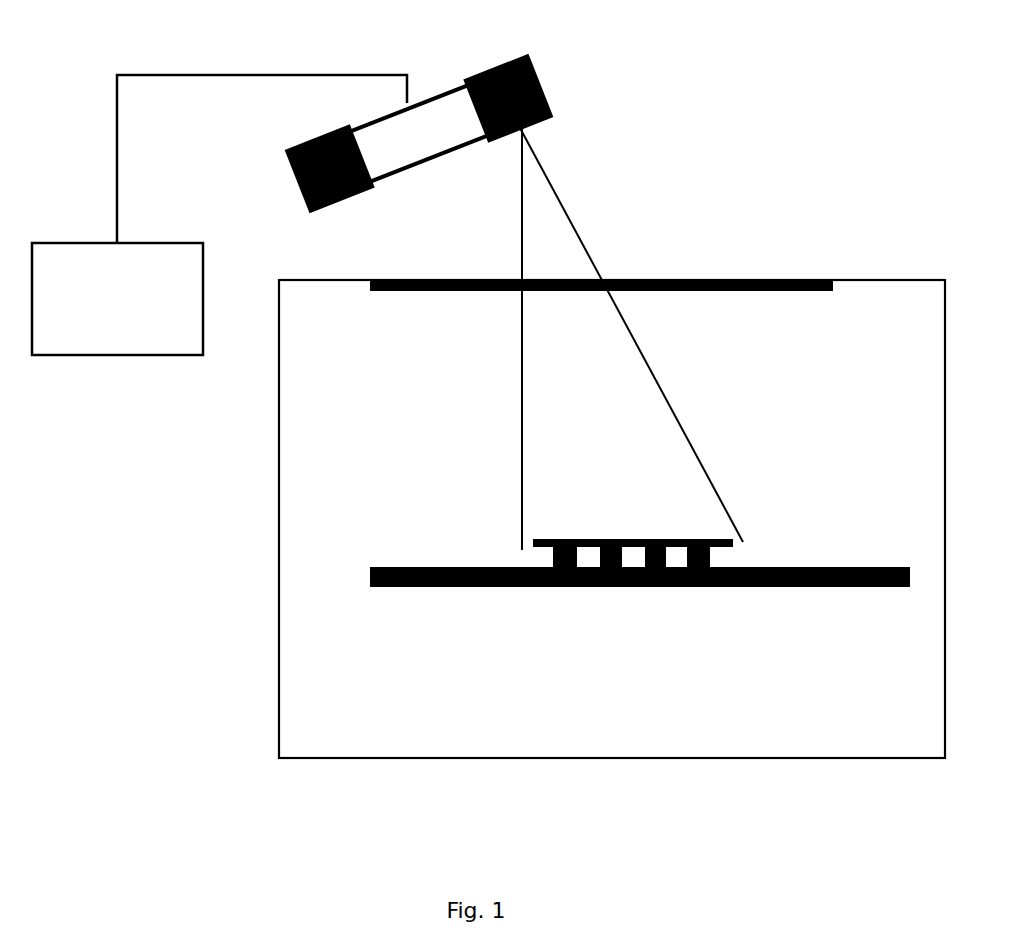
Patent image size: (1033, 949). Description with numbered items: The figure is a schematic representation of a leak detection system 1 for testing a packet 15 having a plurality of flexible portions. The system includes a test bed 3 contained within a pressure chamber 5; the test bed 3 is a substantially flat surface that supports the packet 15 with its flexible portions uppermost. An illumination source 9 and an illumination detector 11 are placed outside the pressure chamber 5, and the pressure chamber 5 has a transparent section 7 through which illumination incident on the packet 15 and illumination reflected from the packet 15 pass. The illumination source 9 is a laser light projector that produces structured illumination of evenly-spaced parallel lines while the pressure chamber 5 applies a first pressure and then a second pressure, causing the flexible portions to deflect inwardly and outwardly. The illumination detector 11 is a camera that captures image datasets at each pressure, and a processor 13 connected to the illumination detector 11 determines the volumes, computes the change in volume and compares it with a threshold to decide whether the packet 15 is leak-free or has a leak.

The leak detection system 1 is at (731, 97).
The test bed 3 is at (783, 587).
The pressure chamber 5 is at (865, 279).
The transparent section 7 is at (782, 292).
The illumination source 9 is at (540, 87).
The illumination detector 11 is at (342, 197).
The processor 13 is at (219, 215).
The packet 15 is at (619, 518).